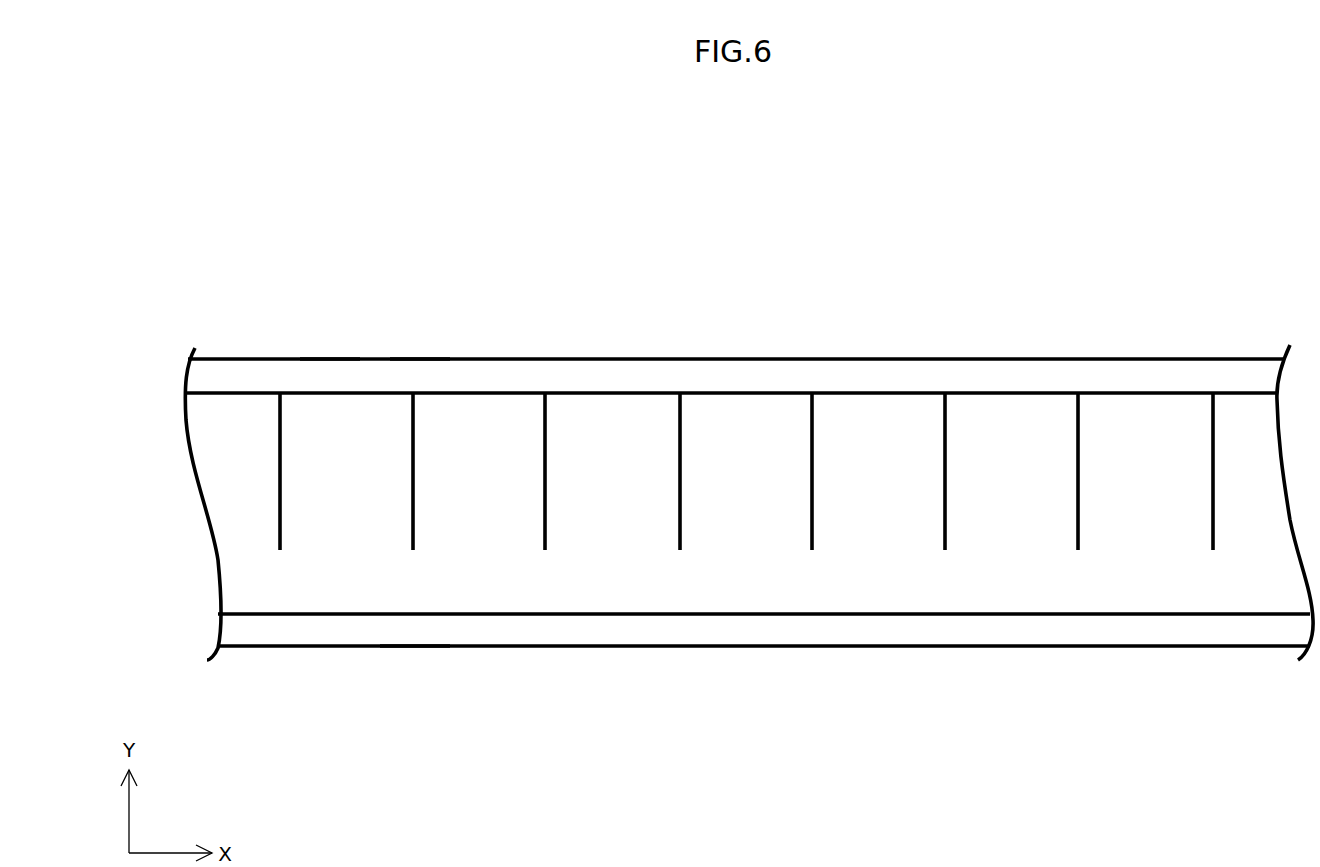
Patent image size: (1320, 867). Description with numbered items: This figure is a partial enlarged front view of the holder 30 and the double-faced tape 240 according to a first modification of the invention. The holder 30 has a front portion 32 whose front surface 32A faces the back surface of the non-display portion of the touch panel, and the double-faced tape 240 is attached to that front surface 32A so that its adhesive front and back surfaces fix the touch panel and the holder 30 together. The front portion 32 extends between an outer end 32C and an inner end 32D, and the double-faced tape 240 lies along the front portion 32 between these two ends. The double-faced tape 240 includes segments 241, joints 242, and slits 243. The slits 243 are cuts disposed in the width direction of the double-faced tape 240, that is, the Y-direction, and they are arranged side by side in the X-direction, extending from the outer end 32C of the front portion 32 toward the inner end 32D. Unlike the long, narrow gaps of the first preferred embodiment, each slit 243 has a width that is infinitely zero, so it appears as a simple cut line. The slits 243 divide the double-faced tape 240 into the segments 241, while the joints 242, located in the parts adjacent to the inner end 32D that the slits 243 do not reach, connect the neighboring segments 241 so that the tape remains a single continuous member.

The holder 30 is at (251, 358).
The front portion 32 is at (208, 380).
The front surface 32A is at (328, 378).
The outer end 32C is at (417, 358).
The inner end 32D is at (418, 648).
The double-faced tape 240 is at (230, 557).
The segments 241 is at (612, 490).
The joints 242 is at (680, 588).
The slits 243 is at (545, 455).